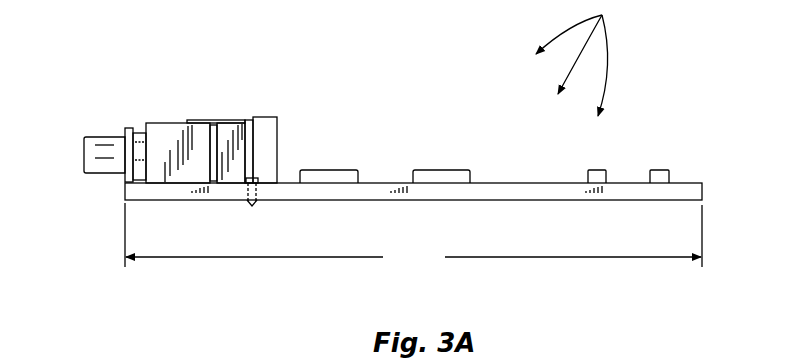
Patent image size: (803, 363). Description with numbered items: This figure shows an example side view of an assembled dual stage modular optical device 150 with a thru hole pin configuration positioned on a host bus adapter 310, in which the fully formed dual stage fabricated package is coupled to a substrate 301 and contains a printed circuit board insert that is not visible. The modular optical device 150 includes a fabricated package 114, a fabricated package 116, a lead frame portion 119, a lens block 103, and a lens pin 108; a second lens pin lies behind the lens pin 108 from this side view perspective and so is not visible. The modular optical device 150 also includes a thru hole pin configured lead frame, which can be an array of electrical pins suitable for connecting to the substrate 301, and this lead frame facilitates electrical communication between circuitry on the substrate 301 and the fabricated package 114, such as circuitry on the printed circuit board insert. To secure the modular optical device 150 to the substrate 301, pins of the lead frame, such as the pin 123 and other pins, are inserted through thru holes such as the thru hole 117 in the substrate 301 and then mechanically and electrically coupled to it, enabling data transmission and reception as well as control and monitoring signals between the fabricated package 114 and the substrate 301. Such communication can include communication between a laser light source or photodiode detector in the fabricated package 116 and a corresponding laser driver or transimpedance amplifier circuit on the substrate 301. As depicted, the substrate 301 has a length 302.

The lens pin 108 is at (108, 137).
The modular optical device 150 is at (85, 88).
The lens block 103 is at (165, 122).
The fabricated package 116 is at (227, 122).
The lead frame portion 119 is at (247, 120).
The fabricated package 114 is at (268, 118).
The thru hole 117 is at (248, 193).
The pin 123 is at (253, 199).
The substrate 301 is at (420, 193).
The length 302 is at (413, 235).
The host bus adapter 310 is at (587, 62).